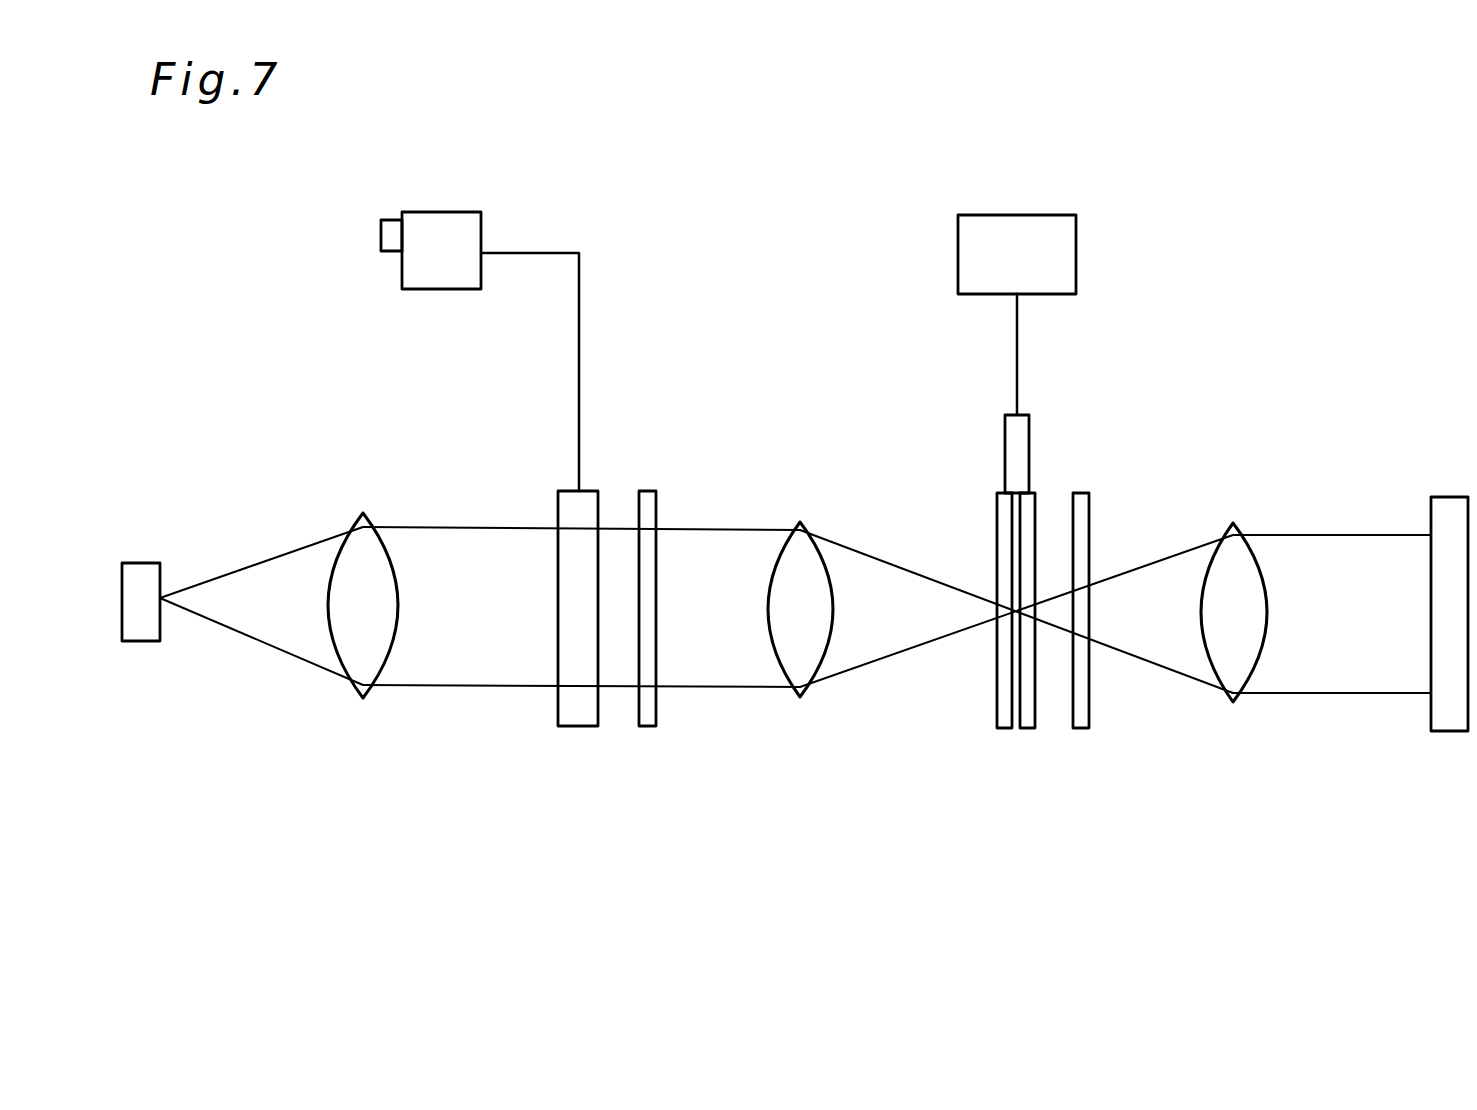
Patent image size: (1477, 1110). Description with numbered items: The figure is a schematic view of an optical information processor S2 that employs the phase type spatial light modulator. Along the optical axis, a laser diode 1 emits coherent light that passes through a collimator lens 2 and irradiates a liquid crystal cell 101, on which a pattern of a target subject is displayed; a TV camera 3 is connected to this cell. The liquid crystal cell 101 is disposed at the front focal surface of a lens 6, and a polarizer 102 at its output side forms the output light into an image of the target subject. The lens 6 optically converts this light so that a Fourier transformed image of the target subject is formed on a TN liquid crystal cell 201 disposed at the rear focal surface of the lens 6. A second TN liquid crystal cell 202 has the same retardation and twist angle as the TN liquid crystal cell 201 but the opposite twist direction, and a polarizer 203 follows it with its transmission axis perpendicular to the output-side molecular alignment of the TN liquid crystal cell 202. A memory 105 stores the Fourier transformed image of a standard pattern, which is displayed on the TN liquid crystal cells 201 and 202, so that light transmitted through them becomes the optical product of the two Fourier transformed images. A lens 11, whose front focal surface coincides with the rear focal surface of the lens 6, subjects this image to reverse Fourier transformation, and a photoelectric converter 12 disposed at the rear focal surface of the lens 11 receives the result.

The optical information processor S2 is at (803, 150).
The laser diode 1 is at (123, 620).
The collimator lens 2 is at (353, 690).
The TV camera 3 is at (430, 289).
The liquid crystal cell 101 is at (573, 726).
The polarizer 102 is at (643, 726).
The lens 6 is at (800, 697).
The memory 105 is at (1076, 252).
The TN liquid crystal cell 201 is at (997, 716).
The TN liquid crystal cell 202 is at (1025, 728).
The polarizer 203 is at (1080, 728).
The lens 11 is at (1230, 702).
The photoelectric converter 12 is at (1448, 731).